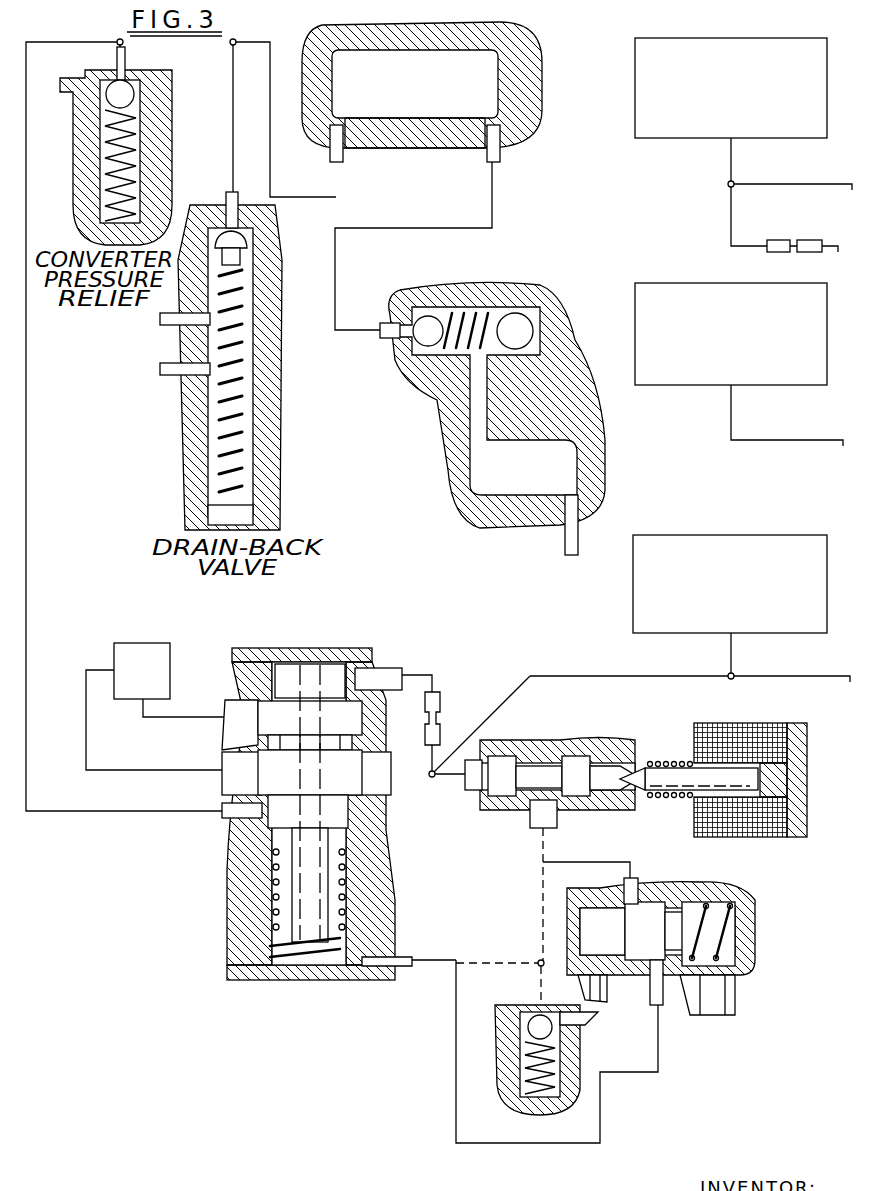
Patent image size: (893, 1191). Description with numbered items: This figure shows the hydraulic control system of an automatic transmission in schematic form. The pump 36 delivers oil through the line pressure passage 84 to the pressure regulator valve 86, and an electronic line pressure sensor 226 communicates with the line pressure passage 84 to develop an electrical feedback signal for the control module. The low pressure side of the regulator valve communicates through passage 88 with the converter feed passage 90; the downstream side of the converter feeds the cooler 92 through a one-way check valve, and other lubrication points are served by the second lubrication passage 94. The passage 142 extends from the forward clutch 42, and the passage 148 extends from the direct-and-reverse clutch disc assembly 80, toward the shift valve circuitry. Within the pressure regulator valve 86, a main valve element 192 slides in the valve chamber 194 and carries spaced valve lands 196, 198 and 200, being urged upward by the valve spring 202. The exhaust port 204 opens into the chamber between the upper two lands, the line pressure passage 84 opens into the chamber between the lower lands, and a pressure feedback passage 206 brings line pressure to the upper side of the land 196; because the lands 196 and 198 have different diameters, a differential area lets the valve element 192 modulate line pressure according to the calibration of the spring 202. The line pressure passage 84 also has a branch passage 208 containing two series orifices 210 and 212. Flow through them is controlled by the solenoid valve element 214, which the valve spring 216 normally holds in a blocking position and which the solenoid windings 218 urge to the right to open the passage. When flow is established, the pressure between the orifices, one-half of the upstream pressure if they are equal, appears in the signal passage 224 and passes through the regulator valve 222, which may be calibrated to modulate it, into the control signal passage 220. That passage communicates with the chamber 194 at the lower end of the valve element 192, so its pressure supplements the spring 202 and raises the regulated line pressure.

The pump 36 is at (148, 643).
The forward clutch 42 is at (707, 385).
The direct-and-reverse clutch disc assembly 80 is at (673, 140).
The line pressure passage 84 is at (86, 730).
The pressure regulator valve 86 is at (310, 840).
The passage 88 is at (26, 442).
The converter feed passage 90 is at (531, 68).
The cooler 92 is at (497, 527).
The second lubrication passage 94 is at (233, 163).
The passage 142 is at (815, 440).
The passage 148 is at (838, 246).
The main valve element 192 is at (322, 772).
The valve chamber 194 is at (262, 817).
The valve land 196 is at (312, 680).
The valve land 198 is at (325, 743).
The valve land 200 is at (330, 798).
The valve spring 202 is at (295, 950).
The exhaust port 204 is at (245, 712).
The pressure feedback passage 206 is at (432, 675).
The branch passage 208 is at (550, 782).
The orifice 210 is at (522, 772).
The orifice 212 is at (588, 775).
The solenoid valve element 214 is at (680, 788).
The valve spring 216 is at (648, 762).
The solenoid windings 218 is at (760, 837).
The control signal passage 220 is at (456, 1055).
The regulator valve 222 is at (765, 952).
The signal passage 224 is at (620, 868).
The electronic line pressure sensor 226 is at (697, 535).